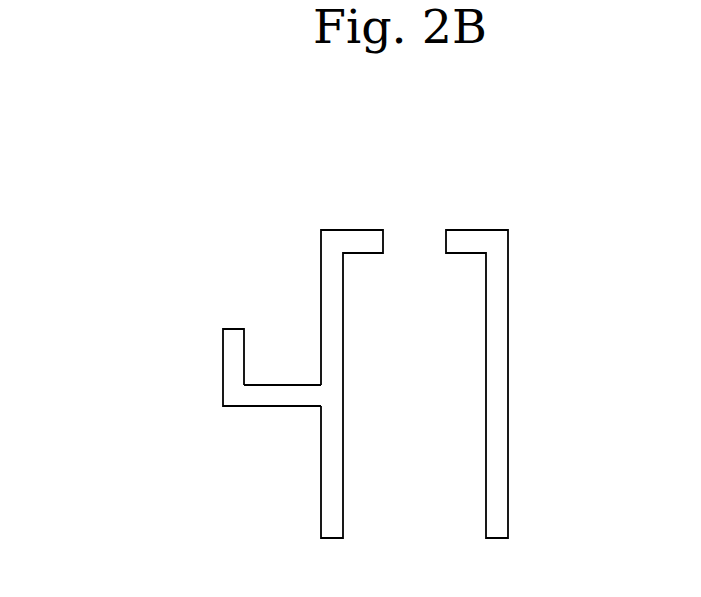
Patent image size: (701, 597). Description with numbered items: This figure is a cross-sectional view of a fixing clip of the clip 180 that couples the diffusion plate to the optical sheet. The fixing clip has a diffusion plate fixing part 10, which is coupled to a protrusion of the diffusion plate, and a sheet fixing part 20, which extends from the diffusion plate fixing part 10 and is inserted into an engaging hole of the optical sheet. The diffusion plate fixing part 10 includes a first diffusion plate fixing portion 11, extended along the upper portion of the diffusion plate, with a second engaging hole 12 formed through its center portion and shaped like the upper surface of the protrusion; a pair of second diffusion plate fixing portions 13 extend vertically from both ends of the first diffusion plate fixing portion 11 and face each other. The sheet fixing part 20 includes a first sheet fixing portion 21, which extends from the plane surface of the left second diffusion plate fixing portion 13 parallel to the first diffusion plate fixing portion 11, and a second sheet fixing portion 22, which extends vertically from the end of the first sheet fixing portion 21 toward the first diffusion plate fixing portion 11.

The clip 180 is at (575, 145).
The diffusion plate fixing part 10 is at (358, 184).
The first diffusion plate fixing portion 11 is at (475, 237).
The second engaging hole 12 is at (415, 233).
The second diffusion plate fixing portions 13 is at (497, 292).
The sheet fixing part 20 is at (158, 350).
The first sheet fixing portion 21 is at (278, 397).
The second sheet fixing portion 22 is at (230, 363).